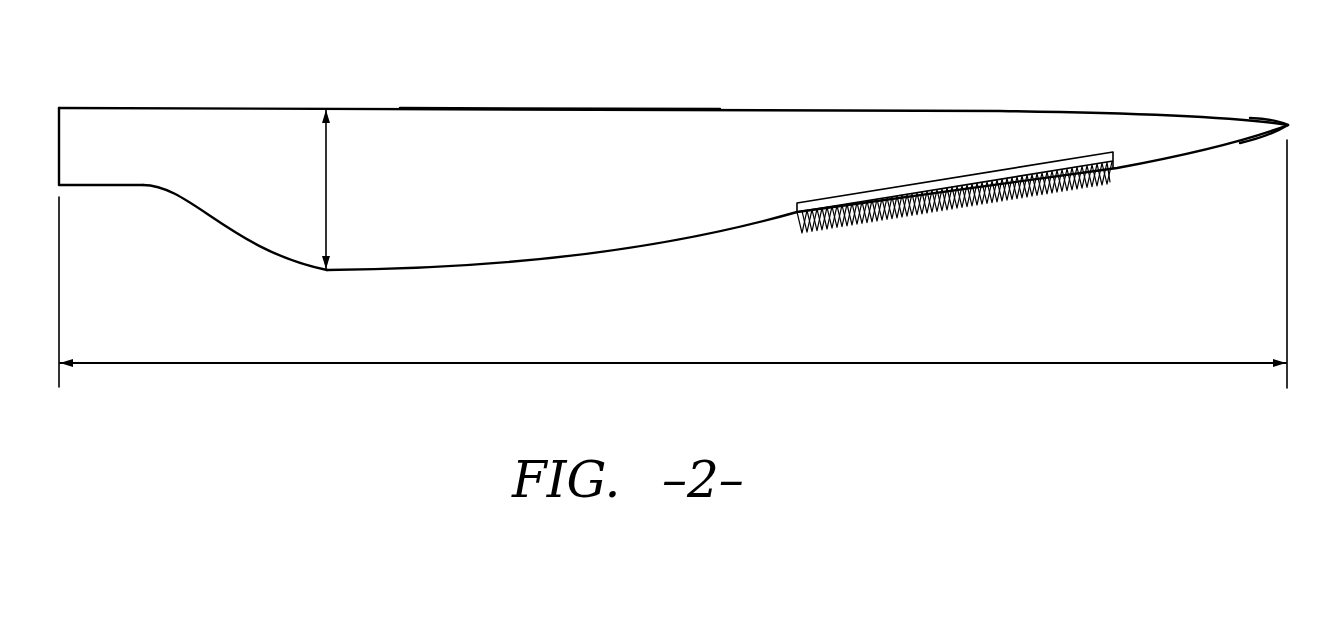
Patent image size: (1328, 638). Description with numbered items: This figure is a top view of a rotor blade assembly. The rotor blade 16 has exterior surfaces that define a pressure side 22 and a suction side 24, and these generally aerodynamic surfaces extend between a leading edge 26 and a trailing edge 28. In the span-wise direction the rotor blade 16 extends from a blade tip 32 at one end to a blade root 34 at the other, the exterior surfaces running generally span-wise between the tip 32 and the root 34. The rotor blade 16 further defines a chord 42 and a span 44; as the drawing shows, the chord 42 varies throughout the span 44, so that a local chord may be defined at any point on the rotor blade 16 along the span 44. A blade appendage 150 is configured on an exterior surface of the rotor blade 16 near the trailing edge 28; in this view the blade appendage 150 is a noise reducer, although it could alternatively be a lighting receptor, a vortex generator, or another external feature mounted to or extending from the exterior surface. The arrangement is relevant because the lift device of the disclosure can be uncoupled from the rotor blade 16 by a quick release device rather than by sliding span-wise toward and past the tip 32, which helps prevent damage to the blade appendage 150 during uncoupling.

The rotor blade 16 is at (668, 192).
The pressure side 22 is at (410, 268).
The suction side 24 is at (707, 133).
The leading edge 26 is at (565, 108).
The trailing edge 28 is at (588, 255).
The blade tip 32 is at (1292, 122).
The blade root 34 is at (57, 124).
The chord 42 is at (325, 158).
The span 44 is at (773, 364).
The blade appendage 150 is at (925, 231).